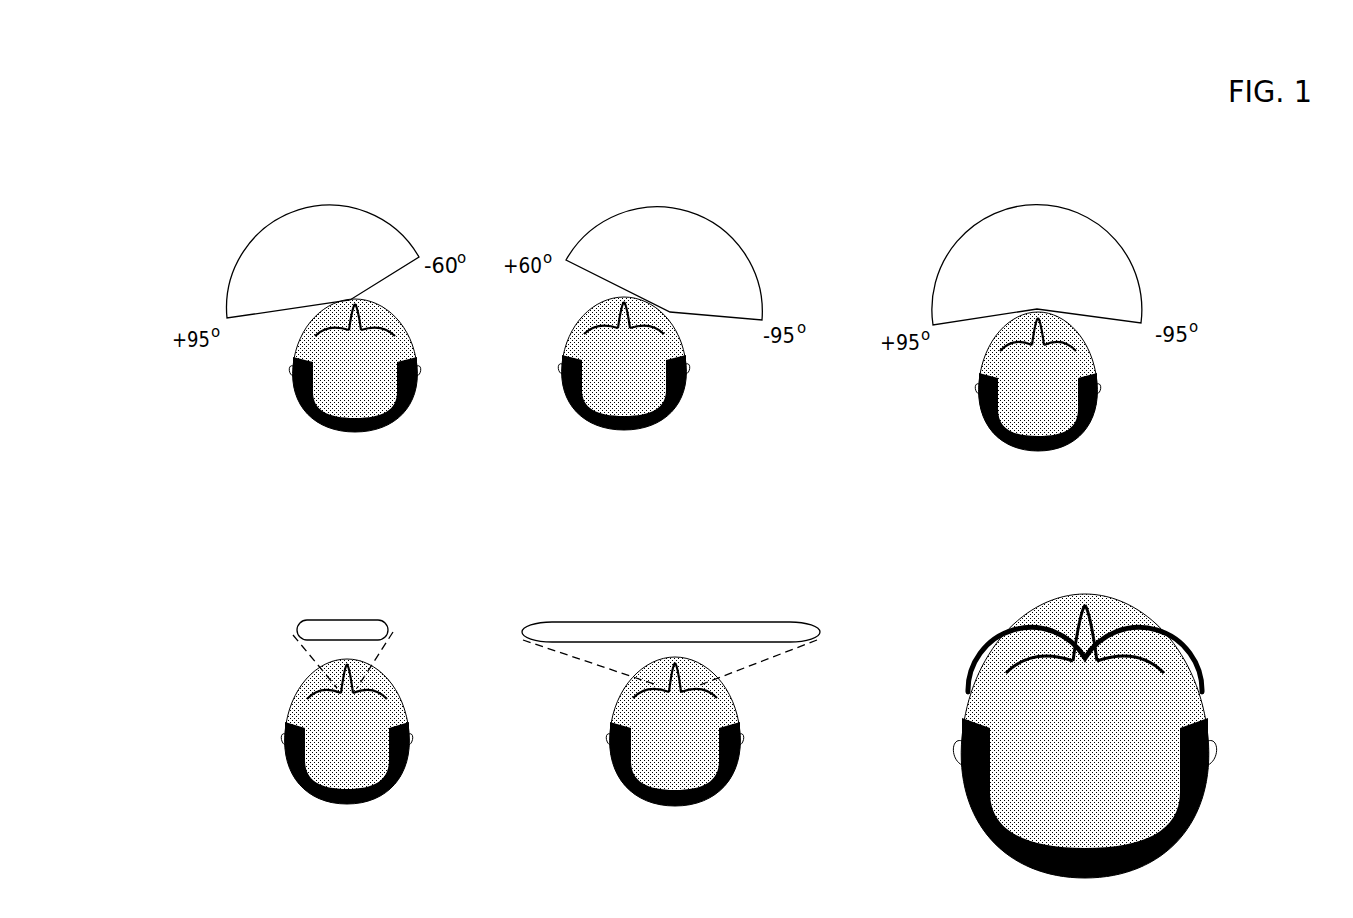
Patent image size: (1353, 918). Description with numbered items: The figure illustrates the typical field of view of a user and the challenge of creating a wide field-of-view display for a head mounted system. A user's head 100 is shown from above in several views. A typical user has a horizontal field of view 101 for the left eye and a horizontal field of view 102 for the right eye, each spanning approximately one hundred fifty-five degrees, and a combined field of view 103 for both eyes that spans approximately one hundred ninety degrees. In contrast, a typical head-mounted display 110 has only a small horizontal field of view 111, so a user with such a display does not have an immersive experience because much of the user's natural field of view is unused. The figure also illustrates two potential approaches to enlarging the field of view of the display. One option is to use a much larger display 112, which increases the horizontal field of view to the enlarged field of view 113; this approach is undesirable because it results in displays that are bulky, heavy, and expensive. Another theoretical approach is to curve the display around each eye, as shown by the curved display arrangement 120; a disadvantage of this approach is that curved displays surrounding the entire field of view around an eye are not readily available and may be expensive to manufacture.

The user head 100 is at (330, 423).
The horizontal field of view for the left eye 101 is at (365, 230).
The horizontal field of view for the right eye 102 is at (673, 232).
The combined field of view 103 is at (1042, 242).
The typical head-mounted display 110 is at (343, 620).
The small horizontal field of view 111 is at (305, 652).
The much larger display 112 is at (685, 620).
The increased horizontal field of view 113 is at (588, 662).
The curved display around each eye 120 is at (1028, 622).